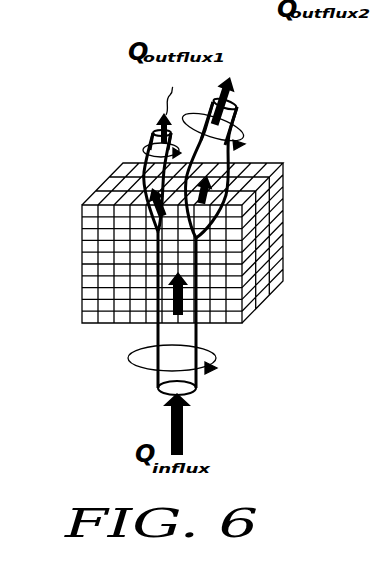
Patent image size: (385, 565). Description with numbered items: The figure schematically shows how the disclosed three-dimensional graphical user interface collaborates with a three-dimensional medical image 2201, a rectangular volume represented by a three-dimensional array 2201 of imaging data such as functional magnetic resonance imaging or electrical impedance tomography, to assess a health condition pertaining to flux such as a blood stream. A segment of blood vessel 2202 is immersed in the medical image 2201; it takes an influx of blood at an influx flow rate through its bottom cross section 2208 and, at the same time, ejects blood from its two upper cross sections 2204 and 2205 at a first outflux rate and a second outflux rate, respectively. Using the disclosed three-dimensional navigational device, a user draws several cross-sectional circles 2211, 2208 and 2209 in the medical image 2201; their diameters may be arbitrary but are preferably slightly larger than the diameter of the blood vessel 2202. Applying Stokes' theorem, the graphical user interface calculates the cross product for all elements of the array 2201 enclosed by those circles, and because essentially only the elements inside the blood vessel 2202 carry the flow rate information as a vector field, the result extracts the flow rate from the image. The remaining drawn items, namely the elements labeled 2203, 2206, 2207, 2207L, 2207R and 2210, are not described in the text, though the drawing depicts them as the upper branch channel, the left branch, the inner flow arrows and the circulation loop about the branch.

The 3D medical image 2201 is at (282, 267).
The blood vessel 2202 is at (198, 333).
The second outflow channel 2203 is at (233, 115).
The upper cross section 2204 is at (237, 100).
The upper cross section 2205 is at (157, 133).
The first outflow channel 2206 is at (150, 137).
The influx flow arrow 2207 is at (157, 293).
The left flow path 2207L is at (138, 193).
The right flow path 2207R is at (255, 184).
The bottom cross section 2208 is at (163, 393).
The cross-sectional circle 2209 is at (138, 367).
The first outflow circulation 2210 is at (142, 150).
The cross-sectional circle 2211 is at (235, 125).